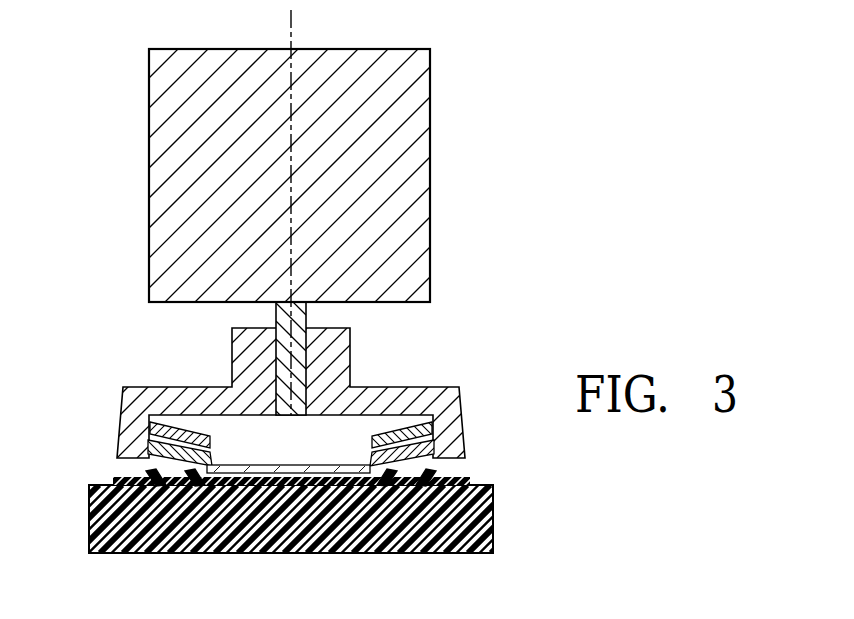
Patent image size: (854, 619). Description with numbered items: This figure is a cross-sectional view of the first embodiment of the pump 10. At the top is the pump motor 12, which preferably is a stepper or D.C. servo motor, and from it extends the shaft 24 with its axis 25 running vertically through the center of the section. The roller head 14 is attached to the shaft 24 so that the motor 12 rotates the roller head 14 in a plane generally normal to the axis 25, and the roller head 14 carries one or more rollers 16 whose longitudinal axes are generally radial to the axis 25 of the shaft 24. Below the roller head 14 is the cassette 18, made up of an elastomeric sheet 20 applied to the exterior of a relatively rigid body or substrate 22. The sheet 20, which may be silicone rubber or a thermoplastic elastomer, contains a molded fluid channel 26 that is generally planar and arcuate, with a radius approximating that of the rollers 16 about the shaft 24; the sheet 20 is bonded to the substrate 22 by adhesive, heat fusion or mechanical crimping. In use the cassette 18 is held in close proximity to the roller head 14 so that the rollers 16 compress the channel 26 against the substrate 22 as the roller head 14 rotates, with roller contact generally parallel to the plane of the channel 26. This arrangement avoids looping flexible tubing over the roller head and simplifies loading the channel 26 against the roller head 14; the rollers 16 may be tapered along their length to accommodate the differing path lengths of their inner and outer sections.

The pump 10 is at (329, 240).
The pump motor 12 is at (431, 141).
The roller head 14 is at (415, 387).
The rollers 16 is at (372, 442).
The cassette 18 is at (301, 512).
The elastomeric sheet 20 is at (446, 477).
The substrate 22 is at (493, 517).
The shaft 24 is at (276, 318).
The axis 25 is at (293, 18).
The fluid channel 26 is at (163, 488).